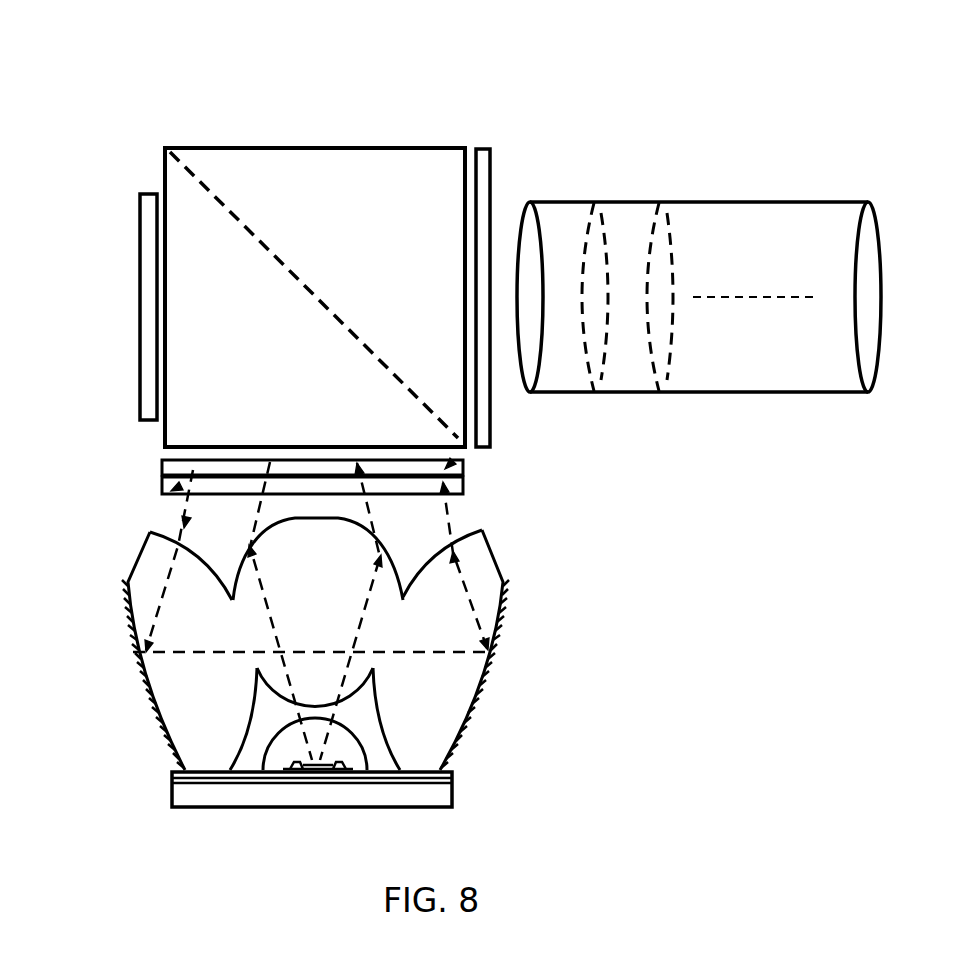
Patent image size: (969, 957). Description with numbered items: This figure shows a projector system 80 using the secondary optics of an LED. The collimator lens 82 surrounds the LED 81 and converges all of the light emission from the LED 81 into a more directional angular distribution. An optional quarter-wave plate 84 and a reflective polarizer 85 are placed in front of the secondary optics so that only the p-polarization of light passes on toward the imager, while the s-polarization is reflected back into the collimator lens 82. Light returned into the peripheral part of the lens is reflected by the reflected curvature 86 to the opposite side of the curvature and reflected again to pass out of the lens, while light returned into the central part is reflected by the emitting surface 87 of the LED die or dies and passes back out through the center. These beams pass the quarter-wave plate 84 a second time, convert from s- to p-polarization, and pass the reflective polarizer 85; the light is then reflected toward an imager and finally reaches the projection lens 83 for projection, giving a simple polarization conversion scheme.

The optical system 80 is at (857, 26).
The LED 81 is at (328, 747).
The collimator lens 82 is at (522, 592).
The projection lens 83 is at (653, 160).
The quarter-wave plate 84 is at (162, 473).
The reflective polarizer 85 is at (463, 461).
The reflected curvature 86 is at (132, 652).
The emitting surface 87 is at (313, 757).